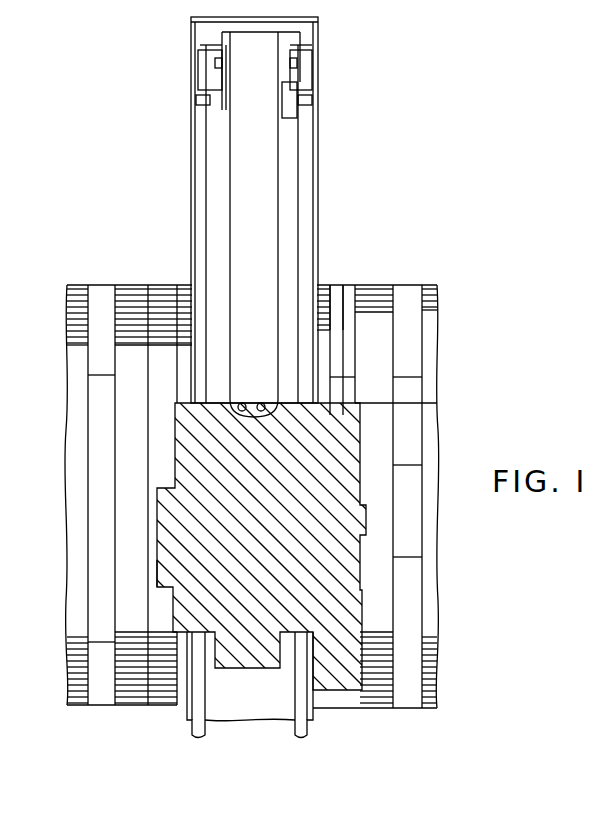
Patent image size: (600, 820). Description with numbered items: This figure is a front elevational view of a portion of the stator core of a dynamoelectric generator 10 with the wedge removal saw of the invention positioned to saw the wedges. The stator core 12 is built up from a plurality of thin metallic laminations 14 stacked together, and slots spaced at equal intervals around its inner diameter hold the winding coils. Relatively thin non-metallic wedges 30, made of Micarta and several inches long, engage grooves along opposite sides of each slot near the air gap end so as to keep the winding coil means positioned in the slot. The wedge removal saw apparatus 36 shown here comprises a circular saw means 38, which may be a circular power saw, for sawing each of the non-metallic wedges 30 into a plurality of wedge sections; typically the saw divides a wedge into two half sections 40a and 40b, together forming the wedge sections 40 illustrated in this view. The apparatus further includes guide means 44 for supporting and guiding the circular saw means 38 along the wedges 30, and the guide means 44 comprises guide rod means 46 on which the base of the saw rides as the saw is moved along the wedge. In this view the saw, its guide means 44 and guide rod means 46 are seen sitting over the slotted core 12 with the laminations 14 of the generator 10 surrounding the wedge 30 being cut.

The dynamoelectric generator 10 is at (32, 442).
The stator core 12 is at (438, 453).
The thin metallic laminations 14 is at (440, 300).
The non-metallic wedges 30 is at (102, 292).
The wedge removal saw apparatus 36 is at (318, 183).
The circular saw means 38 is at (343, 593).
The wedge half sections 40 is at (355, 403).
The wedge half section 40a is at (335, 295).
The wedge half section 40b is at (352, 300).
The guide means 44 is at (292, 141).
The guide rod means 46 is at (306, 118).